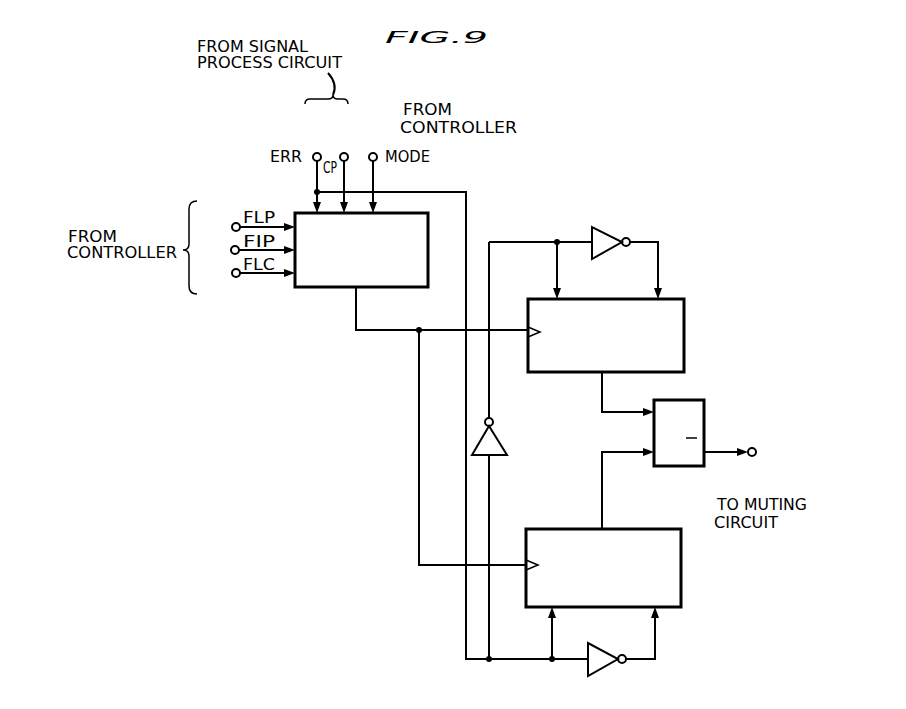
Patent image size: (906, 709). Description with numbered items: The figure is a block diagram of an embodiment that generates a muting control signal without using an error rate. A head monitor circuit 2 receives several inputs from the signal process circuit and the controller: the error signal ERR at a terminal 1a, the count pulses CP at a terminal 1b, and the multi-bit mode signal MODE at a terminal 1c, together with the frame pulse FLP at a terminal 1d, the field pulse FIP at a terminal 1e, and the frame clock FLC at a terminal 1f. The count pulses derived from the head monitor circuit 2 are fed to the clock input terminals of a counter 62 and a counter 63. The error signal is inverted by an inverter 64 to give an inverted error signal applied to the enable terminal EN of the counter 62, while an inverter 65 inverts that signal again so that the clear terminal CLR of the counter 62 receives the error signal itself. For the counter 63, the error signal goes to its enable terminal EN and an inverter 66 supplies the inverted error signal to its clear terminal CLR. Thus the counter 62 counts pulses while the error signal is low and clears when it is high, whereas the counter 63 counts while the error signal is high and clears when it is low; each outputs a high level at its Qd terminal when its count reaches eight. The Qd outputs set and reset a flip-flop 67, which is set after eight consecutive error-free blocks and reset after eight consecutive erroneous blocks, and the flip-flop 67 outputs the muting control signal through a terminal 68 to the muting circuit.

The terminal 1a is at (317, 152).
The terminal 1b is at (344, 152).
The terminal 1c is at (373, 152).
The terminal 1d is at (232, 227).
The terminal 1e is at (231, 250).
The terminal 1f is at (232, 273).
The head monitor circuit 2 is at (302, 287).
The counter 62 is at (684, 310).
The counter 63 is at (648, 537).
The inverter 64 is at (497, 443).
The inverter 65 is at (608, 227).
The inverter 66 is at (608, 670).
The flip-flop 67 is at (707, 408).
The terminal 68 is at (750, 458).